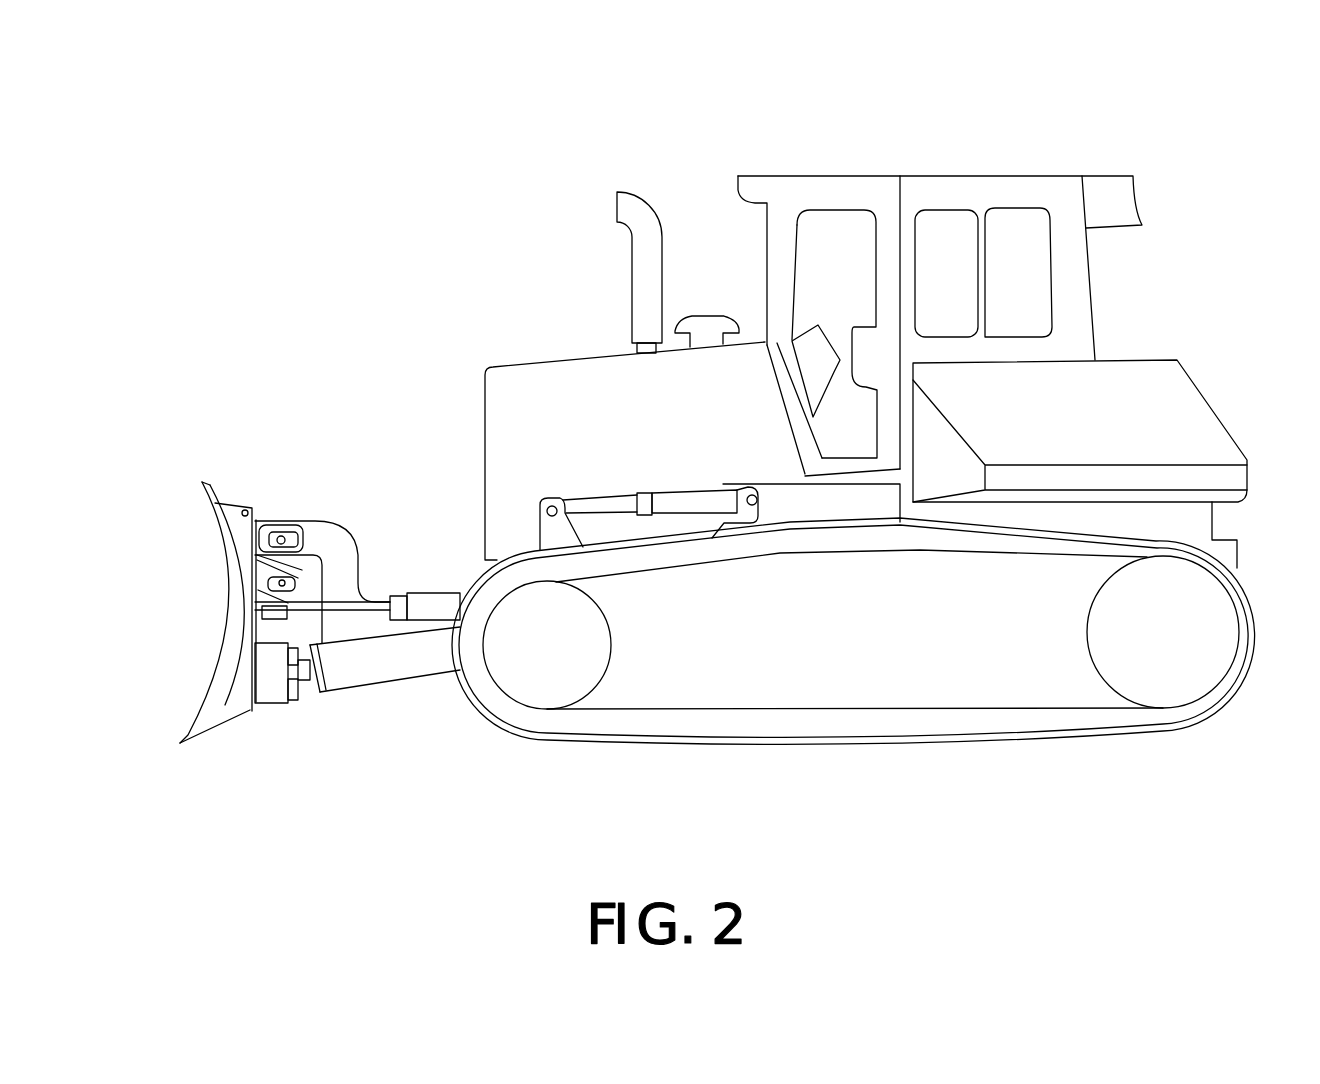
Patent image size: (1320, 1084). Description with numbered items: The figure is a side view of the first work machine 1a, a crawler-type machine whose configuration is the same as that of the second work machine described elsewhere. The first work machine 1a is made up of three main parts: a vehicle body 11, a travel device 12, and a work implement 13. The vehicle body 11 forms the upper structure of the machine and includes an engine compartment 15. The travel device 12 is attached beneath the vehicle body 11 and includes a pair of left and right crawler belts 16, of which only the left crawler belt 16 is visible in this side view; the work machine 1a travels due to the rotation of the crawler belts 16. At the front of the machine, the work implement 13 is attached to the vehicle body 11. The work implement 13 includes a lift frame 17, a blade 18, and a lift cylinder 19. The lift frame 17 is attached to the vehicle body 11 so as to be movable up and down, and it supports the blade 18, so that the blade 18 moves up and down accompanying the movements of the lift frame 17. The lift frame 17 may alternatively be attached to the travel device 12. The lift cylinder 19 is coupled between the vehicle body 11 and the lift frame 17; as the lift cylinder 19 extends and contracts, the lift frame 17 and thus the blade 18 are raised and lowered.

The first work machine 1a is at (268, 155).
The vehicle body 11 is at (578, 267).
The travel device 12 is at (1136, 750).
The work implement 13 is at (338, 455).
The engine compartment 15 is at (705, 383).
The crawler belt 16 is at (998, 744).
The lift frame 17 is at (403, 675).
The blade 18 is at (238, 556).
The lift cylinder 19 is at (678, 503).